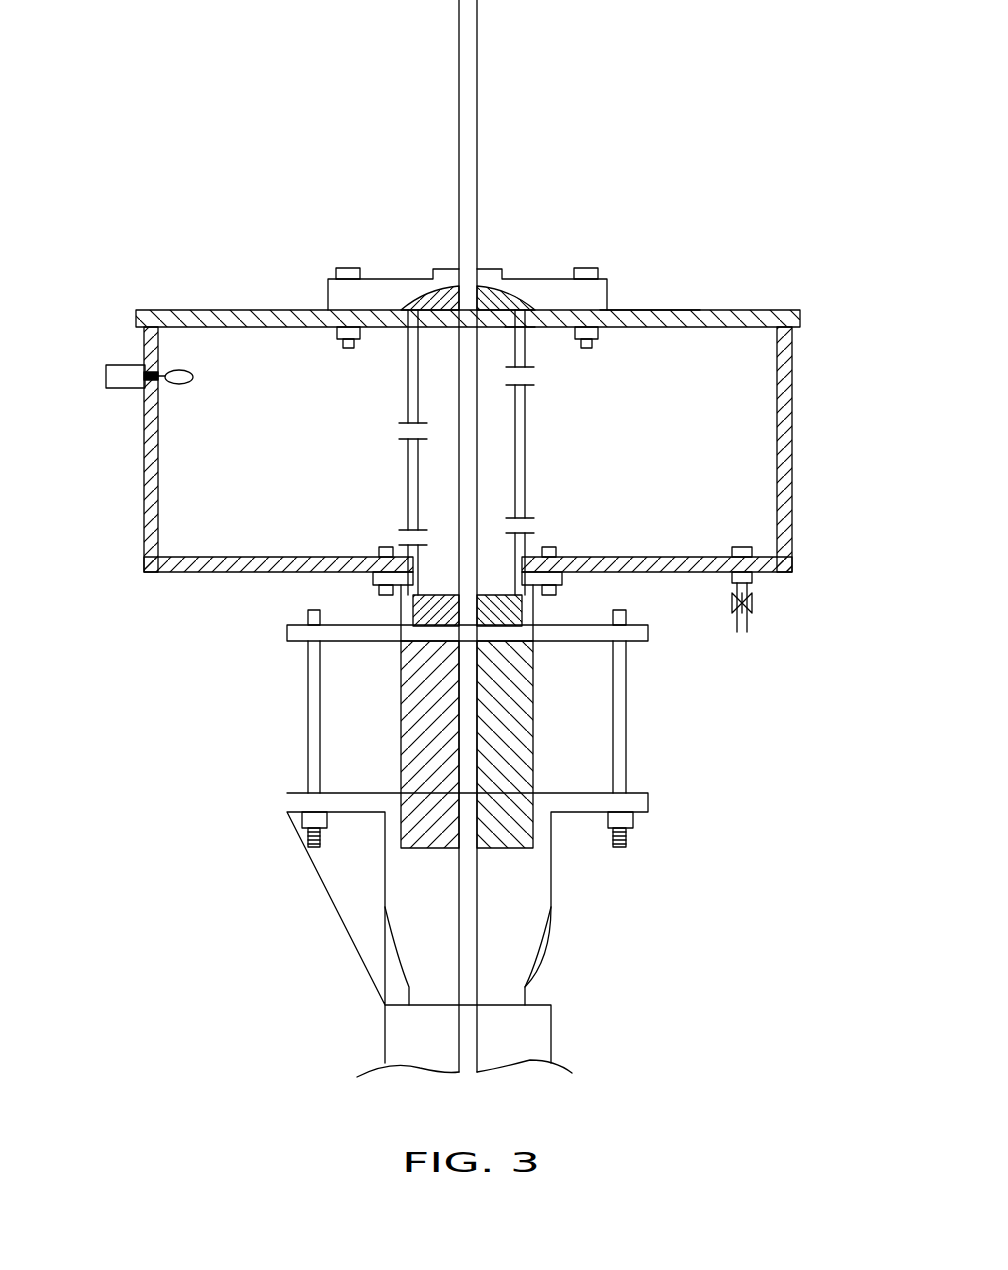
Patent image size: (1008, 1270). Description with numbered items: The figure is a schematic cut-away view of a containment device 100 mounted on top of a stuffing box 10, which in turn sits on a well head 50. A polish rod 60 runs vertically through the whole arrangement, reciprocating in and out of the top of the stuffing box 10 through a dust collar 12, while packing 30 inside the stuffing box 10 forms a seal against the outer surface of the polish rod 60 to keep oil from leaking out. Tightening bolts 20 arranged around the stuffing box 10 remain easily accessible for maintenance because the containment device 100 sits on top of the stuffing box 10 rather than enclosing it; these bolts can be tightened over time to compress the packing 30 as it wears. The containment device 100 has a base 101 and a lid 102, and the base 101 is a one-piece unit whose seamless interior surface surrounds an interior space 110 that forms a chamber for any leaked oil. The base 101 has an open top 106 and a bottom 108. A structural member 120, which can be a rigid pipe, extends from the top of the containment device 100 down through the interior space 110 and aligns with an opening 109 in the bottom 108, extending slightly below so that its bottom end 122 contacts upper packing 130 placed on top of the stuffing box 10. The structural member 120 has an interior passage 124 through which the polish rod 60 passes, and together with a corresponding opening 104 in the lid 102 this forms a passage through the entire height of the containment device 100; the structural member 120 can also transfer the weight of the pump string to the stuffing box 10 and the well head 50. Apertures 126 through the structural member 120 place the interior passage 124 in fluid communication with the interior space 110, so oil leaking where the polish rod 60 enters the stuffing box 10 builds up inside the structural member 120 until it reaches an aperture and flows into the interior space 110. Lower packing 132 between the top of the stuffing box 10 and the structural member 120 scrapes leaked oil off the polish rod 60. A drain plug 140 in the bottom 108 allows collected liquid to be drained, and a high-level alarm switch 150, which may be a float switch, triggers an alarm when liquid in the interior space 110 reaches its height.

The stuffing box 10 is at (685, 718).
The dust collar 12 is at (443, 267).
The tightening bolts 20 is at (305, 737).
The packing 30 is at (415, 745).
The well head 50 is at (574, 1015).
The polish rod 60 is at (478, 47).
The containment device 100 is at (787, 263).
The base 101 is at (792, 372).
The lid 102 is at (200, 308).
The opening 104 is at (513, 317).
The open top 106 is at (693, 350).
The bottom 108 is at (175, 565).
The opening 109 is at (538, 573).
The interior space 110 is at (713, 440).
The structural member 120 is at (648, 320).
The bottom end 122 is at (410, 605).
The interior passage 124 is at (430, 315).
The apertures 126 is at (558, 312).
The upper packing 130 is at (487, 293).
The lower packing 132 is at (520, 600).
The drain plug 140 is at (752, 600).
The high-level alarm switch 150 is at (120, 365).